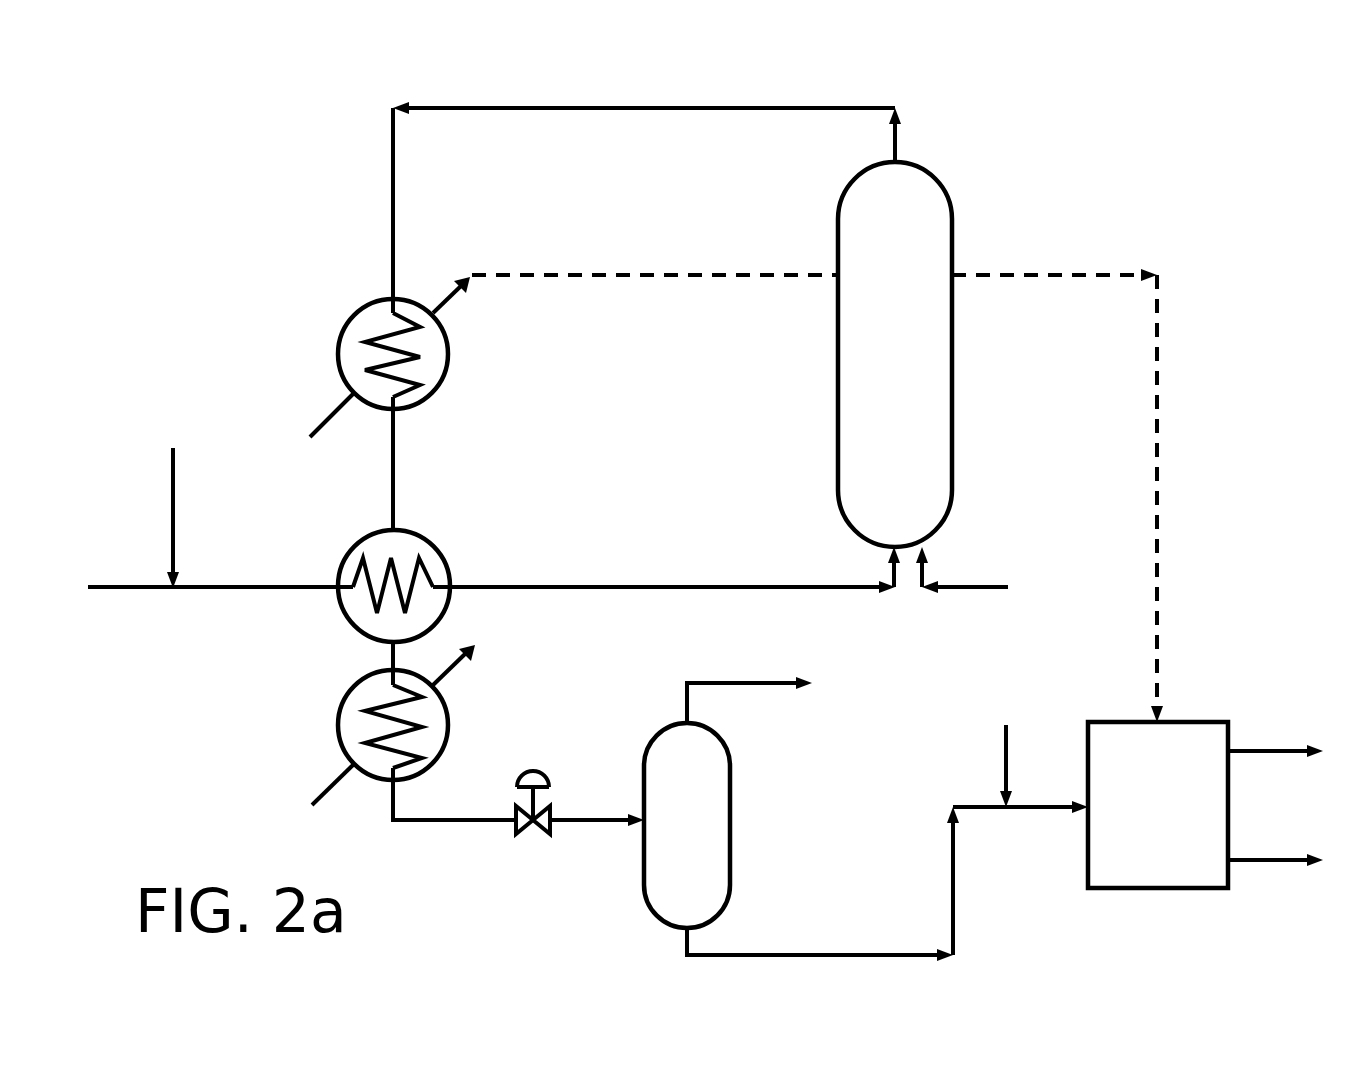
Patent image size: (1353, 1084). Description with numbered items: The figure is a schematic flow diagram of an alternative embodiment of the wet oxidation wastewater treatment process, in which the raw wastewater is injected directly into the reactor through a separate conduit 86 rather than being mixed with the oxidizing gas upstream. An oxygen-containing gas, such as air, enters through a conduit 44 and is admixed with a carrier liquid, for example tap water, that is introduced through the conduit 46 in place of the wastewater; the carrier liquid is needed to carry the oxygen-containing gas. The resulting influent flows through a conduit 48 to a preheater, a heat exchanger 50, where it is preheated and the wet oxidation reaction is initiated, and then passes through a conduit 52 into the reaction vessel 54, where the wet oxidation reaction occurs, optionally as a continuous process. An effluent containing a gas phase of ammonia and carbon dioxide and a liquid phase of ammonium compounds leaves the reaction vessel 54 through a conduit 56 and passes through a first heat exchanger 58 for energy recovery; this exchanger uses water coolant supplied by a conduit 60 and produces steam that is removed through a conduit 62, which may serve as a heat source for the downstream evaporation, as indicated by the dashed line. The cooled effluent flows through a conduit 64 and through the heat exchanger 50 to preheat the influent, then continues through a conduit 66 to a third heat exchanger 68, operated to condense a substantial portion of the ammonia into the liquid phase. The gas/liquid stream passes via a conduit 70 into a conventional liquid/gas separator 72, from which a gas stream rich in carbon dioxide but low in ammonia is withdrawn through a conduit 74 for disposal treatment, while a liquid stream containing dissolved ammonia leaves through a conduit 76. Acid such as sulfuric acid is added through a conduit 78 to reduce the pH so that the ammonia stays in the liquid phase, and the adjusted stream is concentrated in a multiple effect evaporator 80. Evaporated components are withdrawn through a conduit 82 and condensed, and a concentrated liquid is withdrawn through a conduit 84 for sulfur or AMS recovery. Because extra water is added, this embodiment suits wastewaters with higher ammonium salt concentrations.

The conduit 44 is at (173, 480).
The conduit 46 is at (151, 588).
The conduit 48 is at (283, 588).
The heat exchanger 50 is at (440, 554).
The conduit 52 is at (728, 587).
The reaction vessel 54 is at (952, 399).
The conduit 56 is at (898, 150).
The first heat exchanger 58 is at (343, 333).
The conduit 60 is at (333, 408).
The conduit 62 is at (472, 275).
The conduit 64 is at (393, 487).
The conduit 66 is at (390, 655).
The third heat exchanger 68 is at (448, 717).
The conduit 70 is at (477, 820).
The liquid/gas separator 72 is at (730, 818).
The conduit 74 is at (728, 683).
The conduit 76 is at (743, 955).
The conduit 78 is at (1010, 765).
The multiple effect evaporator 80 is at (1193, 888).
The conduit 82 is at (1275, 750).
The conduit 84 is at (1274, 862).
The separate conduit 86 is at (977, 590).